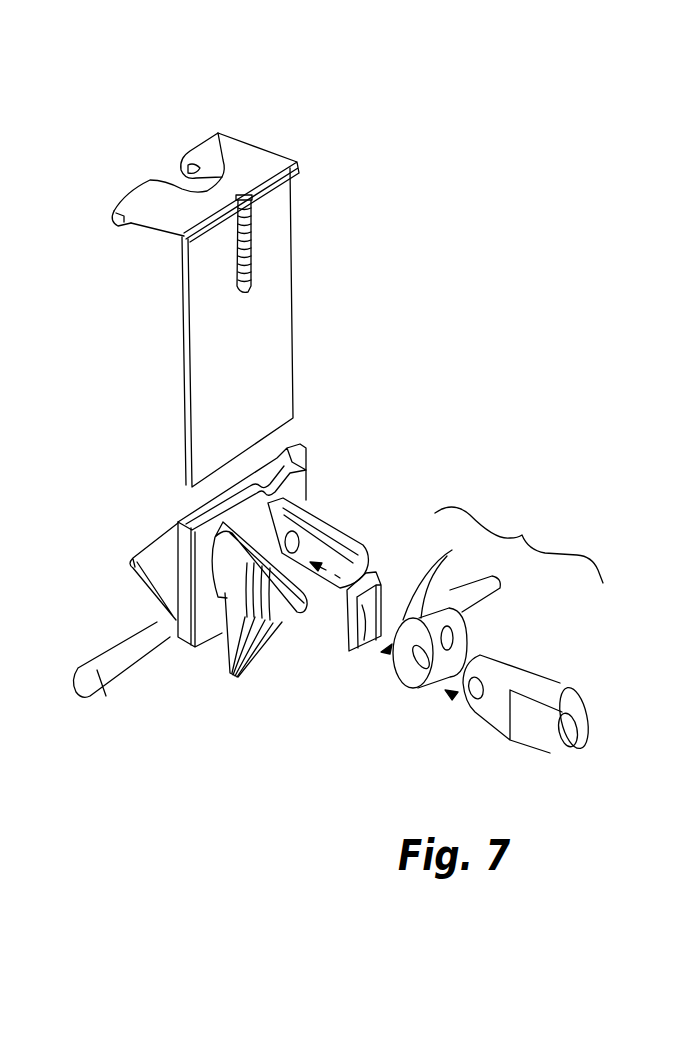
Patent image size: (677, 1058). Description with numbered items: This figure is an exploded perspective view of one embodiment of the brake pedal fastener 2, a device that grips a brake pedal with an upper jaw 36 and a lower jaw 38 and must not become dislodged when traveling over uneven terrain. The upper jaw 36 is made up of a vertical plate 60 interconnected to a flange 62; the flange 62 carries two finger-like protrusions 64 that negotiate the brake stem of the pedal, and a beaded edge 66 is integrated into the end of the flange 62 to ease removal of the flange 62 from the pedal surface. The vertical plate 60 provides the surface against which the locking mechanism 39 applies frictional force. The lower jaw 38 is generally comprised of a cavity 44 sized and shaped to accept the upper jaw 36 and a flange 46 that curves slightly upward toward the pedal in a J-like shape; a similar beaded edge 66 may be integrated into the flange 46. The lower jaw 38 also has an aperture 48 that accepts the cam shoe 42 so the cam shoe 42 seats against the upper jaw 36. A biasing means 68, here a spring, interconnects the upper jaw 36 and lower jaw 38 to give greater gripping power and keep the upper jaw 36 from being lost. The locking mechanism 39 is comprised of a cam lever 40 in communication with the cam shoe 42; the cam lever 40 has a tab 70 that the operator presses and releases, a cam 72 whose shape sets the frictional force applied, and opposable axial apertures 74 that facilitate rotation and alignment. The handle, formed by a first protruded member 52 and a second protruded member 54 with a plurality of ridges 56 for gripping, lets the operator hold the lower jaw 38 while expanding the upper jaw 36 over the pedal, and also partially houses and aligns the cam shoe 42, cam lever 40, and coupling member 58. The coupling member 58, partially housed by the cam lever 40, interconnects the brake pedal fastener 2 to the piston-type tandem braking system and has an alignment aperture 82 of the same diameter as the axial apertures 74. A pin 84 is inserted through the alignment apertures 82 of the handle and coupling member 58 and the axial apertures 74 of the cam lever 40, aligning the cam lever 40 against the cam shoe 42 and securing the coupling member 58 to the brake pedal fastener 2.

The brake pedal fastener 2 is at (492, 300).
The upper jaw 36 is at (245, 273).
The lower jaw 38 is at (203, 640).
The locking mechanism 39 is at (519, 542).
The cam lever 40 is at (475, 663).
The cam shoe 42 is at (362, 647).
The cavity 44 is at (347, 488).
The flange 46 is at (140, 593).
The aperture 48 is at (265, 530).
The first protruded member 52 is at (291, 716).
The second protruded member 54 is at (327, 550).
The ridges 56 is at (232, 676).
The coupling member 58 is at (564, 675).
The vertical plate 60 is at (295, 343).
The flange 62 is at (262, 142).
The finger-like protrusions 64 is at (140, 186).
The beaded edge 66 is at (127, 227).
The biasing means 68 is at (249, 247).
The tab 70 is at (497, 568).
The cam 72 is at (447, 578).
The axial apertures 74 is at (472, 633).
The alignment aperture 82 is at (296, 540).
The pin 84 is at (113, 677).